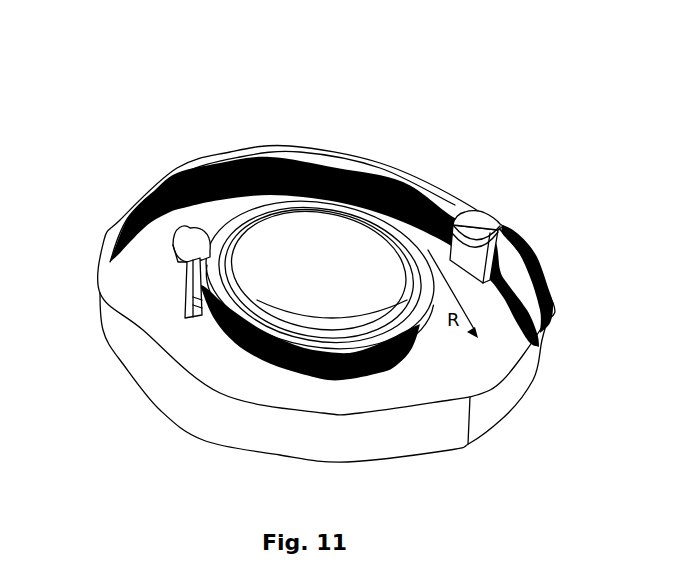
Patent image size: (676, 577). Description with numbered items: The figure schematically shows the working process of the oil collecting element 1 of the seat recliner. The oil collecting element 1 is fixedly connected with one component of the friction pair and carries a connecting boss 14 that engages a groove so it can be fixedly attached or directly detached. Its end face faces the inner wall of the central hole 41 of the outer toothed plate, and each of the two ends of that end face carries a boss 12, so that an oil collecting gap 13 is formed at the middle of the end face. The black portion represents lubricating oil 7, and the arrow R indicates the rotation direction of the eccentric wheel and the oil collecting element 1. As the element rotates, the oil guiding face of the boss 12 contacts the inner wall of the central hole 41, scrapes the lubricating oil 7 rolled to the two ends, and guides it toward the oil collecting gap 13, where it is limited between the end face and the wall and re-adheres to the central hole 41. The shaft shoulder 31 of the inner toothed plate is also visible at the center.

The oil collecting element 1 is at (326, 292).
The lubricating oil 7 is at (306, 283).
The boss 12 is at (134, 247).
The oil collecting gap 13 is at (130, 334).
The connecting boss 14 is at (284, 203).
The shaft shoulder 31 is at (315, 249).
The central hole 41 is at (282, 192).